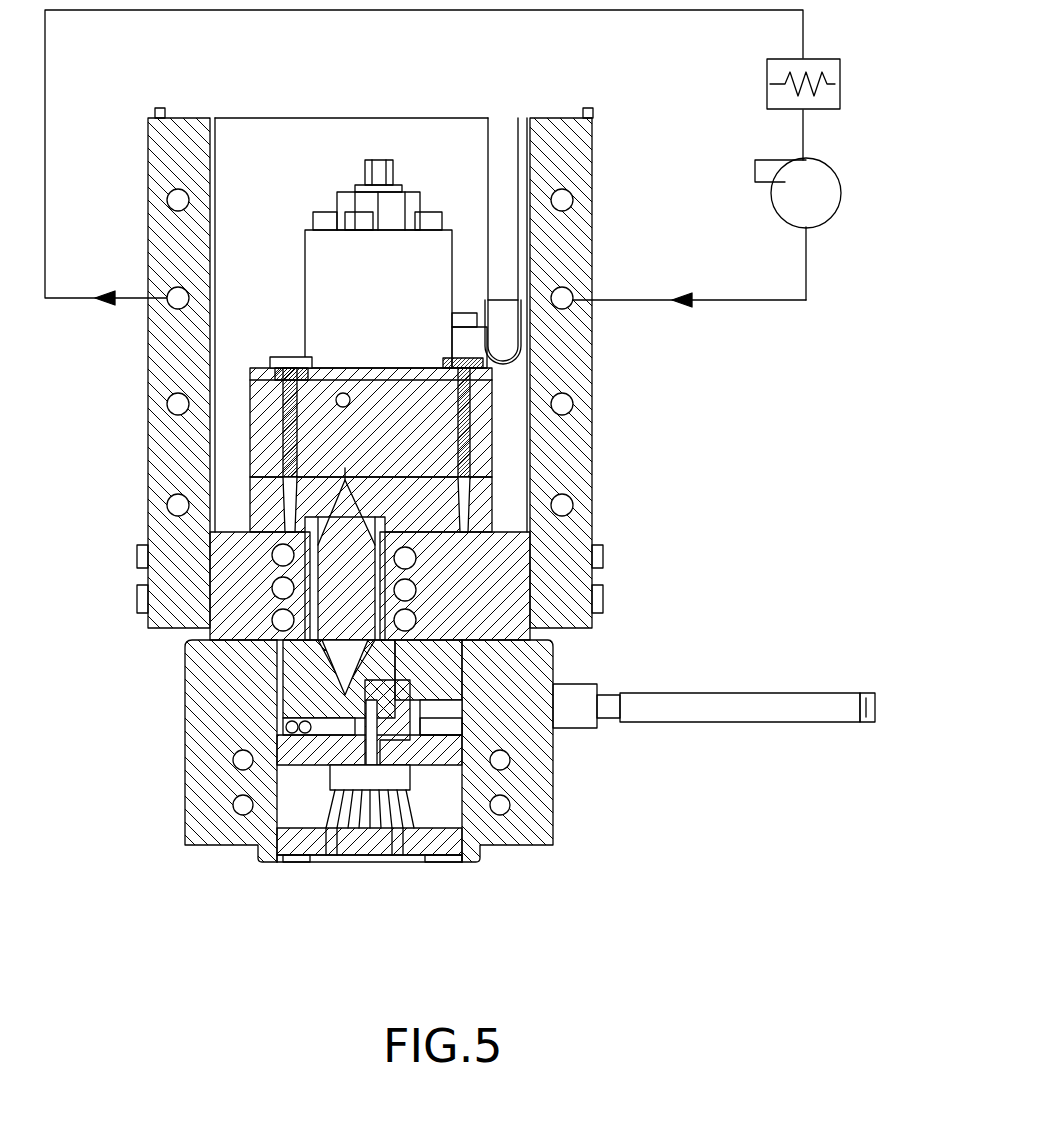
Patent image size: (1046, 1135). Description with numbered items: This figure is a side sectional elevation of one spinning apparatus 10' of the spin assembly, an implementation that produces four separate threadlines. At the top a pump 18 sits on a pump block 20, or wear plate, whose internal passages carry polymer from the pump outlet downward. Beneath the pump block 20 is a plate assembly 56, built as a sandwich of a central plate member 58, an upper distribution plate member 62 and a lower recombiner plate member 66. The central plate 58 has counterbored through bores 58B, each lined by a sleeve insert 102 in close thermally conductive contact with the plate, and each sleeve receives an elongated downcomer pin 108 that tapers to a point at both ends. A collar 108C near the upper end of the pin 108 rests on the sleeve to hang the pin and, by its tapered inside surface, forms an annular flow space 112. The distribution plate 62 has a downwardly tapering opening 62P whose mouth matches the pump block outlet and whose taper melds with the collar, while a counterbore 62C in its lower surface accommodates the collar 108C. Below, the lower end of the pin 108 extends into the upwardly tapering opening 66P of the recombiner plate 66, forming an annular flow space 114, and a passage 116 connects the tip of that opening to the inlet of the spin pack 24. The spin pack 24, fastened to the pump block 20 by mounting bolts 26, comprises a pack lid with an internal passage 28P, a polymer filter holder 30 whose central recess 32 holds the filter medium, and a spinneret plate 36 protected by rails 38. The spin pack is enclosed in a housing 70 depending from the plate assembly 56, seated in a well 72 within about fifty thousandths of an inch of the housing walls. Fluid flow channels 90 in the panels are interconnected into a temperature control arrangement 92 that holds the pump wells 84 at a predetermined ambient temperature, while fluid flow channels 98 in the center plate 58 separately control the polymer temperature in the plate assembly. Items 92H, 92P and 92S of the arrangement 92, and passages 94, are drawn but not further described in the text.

The spinning apparatus 10' is at (670, 125).
The pump 18 is at (298, 212).
The pump block 20 is at (235, 372).
The spin pack 24 is at (497, 768).
The mounting bolts 26 is at (775, 708).
The internal passage 28P is at (378, 742).
The polymer filter holder 30 is at (300, 830).
The central recess 32 is at (340, 790).
The spinneret plate 36 is at (258, 848).
The rails 38 is at (440, 862).
The plate assembly 56 is at (545, 553).
The central plate member 58 is at (240, 628).
The through bores 58B is at (420, 615).
The upper distribution plate member 62 is at (258, 506).
The counterbore 62C is at (283, 500).
The downwardly tapering opening 62P is at (283, 455).
The lower recombiner plate member 66 is at (440, 652).
The upwardly extending tapering opening 66P is at (527, 648).
The housing 70 is at (200, 735).
The wells 72 is at (470, 830).
The pump wells 84 is at (440, 155).
The fluid flow channels 90 is at (176, 200).
The temperature control arrangement 92 is at (768, 312).
The heater 92H is at (842, 60).
The pump 92P is at (835, 165).
The supply line 92S is at (340, 12).
The passages 94 is at (243, 800).
The fluid flow channels 98 is at (143, 555).
The sleeve insert 102 is at (143, 598).
The downcomer pin 108 is at (218, 652).
The collar 108C is at (527, 534).
The annular flow space 112 is at (350, 480).
The annular flow space 114 is at (300, 668).
The passage 116 is at (300, 700).